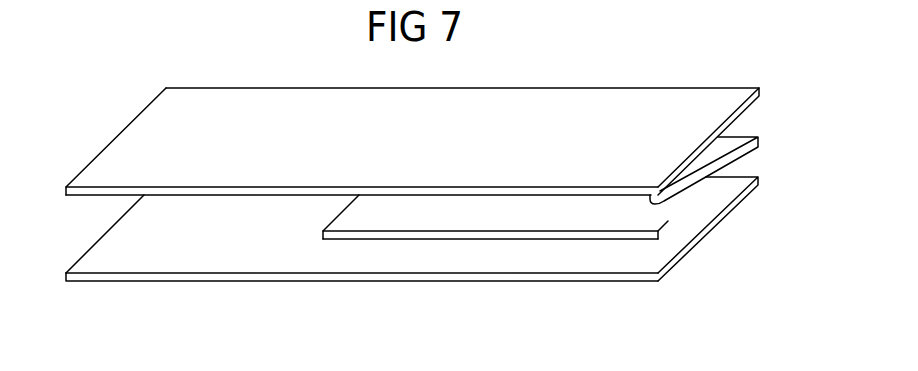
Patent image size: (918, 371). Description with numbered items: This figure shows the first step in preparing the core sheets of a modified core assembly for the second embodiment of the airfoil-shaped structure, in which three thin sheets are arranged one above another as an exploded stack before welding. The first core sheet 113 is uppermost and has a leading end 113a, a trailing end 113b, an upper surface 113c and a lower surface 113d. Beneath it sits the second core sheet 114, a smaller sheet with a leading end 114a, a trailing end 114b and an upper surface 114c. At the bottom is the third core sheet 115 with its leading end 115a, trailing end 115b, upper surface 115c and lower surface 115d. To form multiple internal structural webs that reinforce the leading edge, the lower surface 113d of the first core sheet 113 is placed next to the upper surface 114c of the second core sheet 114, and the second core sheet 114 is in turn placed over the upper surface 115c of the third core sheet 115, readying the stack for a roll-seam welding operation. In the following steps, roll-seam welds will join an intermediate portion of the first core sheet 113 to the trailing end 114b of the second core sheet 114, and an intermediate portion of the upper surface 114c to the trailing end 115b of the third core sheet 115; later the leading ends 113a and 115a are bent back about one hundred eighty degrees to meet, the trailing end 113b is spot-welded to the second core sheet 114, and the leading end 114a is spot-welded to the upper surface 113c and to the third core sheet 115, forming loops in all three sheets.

The first core sheet 113 is at (434, 112).
The leading end of first core sheet 113a is at (128, 143).
The trailing end of first core sheet 113b is at (725, 102).
The upper surface of first core sheet 113c is at (311, 97).
The lower surface of first core sheet 113d is at (656, 198).
The second core sheet 114 is at (547, 258).
The leading end of second core sheet 114a is at (357, 220).
The trailing end of second core sheet 114b is at (668, 230).
The upper surface of second core sheet 114c is at (623, 205).
The third core sheet 115 is at (390, 257).
The leading end of third core sheet 115a is at (110, 252).
The trailing end of third core sheet 115b is at (590, 262).
The upper surface of third core sheet 115c is at (248, 257).
The lower surface of third core sheet 115d is at (442, 278).